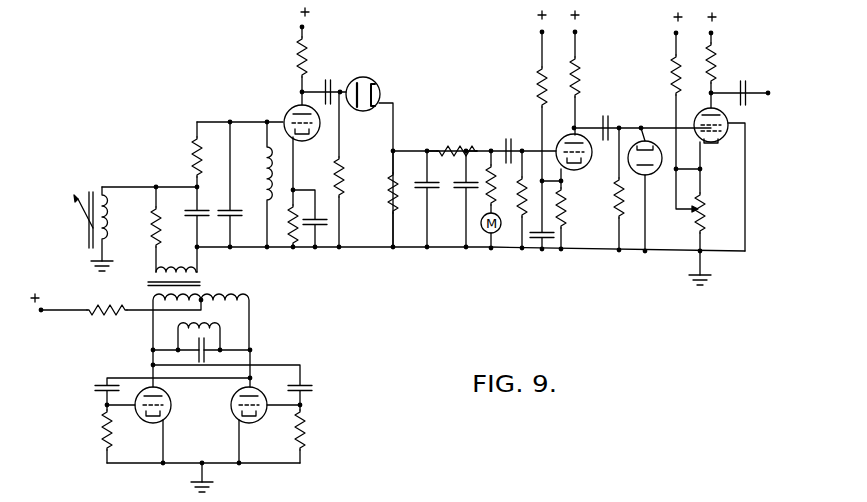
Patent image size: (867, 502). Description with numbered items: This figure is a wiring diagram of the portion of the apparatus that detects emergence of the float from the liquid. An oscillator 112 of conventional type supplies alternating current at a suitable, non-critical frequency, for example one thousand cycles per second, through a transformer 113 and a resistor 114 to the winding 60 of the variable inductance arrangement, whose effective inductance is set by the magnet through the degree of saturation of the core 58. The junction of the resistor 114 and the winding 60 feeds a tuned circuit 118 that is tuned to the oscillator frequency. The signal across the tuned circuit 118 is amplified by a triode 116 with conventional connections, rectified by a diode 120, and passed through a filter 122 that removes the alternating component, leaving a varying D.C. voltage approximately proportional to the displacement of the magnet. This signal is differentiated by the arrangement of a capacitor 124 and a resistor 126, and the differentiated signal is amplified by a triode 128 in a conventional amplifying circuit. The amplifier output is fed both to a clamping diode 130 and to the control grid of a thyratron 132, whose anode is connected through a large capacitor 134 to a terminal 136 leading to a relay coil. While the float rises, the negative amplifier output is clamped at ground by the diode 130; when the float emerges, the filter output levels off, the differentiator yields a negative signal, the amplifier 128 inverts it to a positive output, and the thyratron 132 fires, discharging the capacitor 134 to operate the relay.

The core 58 is at (75, 222).
The winding 60 is at (106, 212).
The oscillator 112 is at (261, 361).
The transformer 113 is at (140, 295).
The resistor 114 is at (159, 223).
The triode 116 is at (289, 108).
The tuned circuit 118 is at (237, 250).
The diode 120 is at (376, 82).
The filter 122 is at (441, 256).
The capacitor 124 is at (507, 141).
The resistor 126 is at (517, 205).
The triode 128 is at (582, 166).
The clamping diode 130 is at (659, 178).
The thyratron 132 is at (728, 113).
The large capacitor 134 is at (739, 87).
The terminal 136 is at (768, 89).